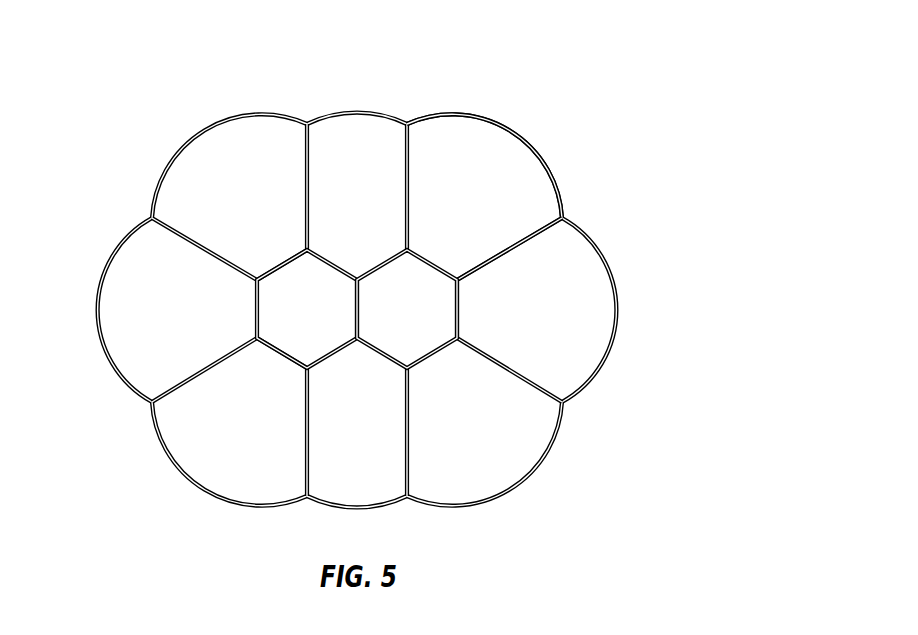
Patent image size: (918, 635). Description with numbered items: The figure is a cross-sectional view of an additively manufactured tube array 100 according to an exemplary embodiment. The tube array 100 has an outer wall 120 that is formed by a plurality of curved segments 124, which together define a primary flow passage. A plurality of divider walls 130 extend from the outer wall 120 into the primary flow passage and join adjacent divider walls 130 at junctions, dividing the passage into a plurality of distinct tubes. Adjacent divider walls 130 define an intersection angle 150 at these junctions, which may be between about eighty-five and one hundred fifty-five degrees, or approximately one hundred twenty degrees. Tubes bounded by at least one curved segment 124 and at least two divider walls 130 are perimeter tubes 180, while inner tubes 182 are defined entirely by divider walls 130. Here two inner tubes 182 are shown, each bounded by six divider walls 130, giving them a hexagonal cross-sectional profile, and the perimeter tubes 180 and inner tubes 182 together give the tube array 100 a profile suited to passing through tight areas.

The tube array 100 is at (120, 64).
The outer wall 120 is at (248, 102).
The curved segments 124 is at (525, 130).
The divider walls 130 is at (484, 207).
The intersection angle 150 is at (278, 250).
The perimeter tubes 180 is at (376, 439).
The inner tubes 182 is at (319, 324).